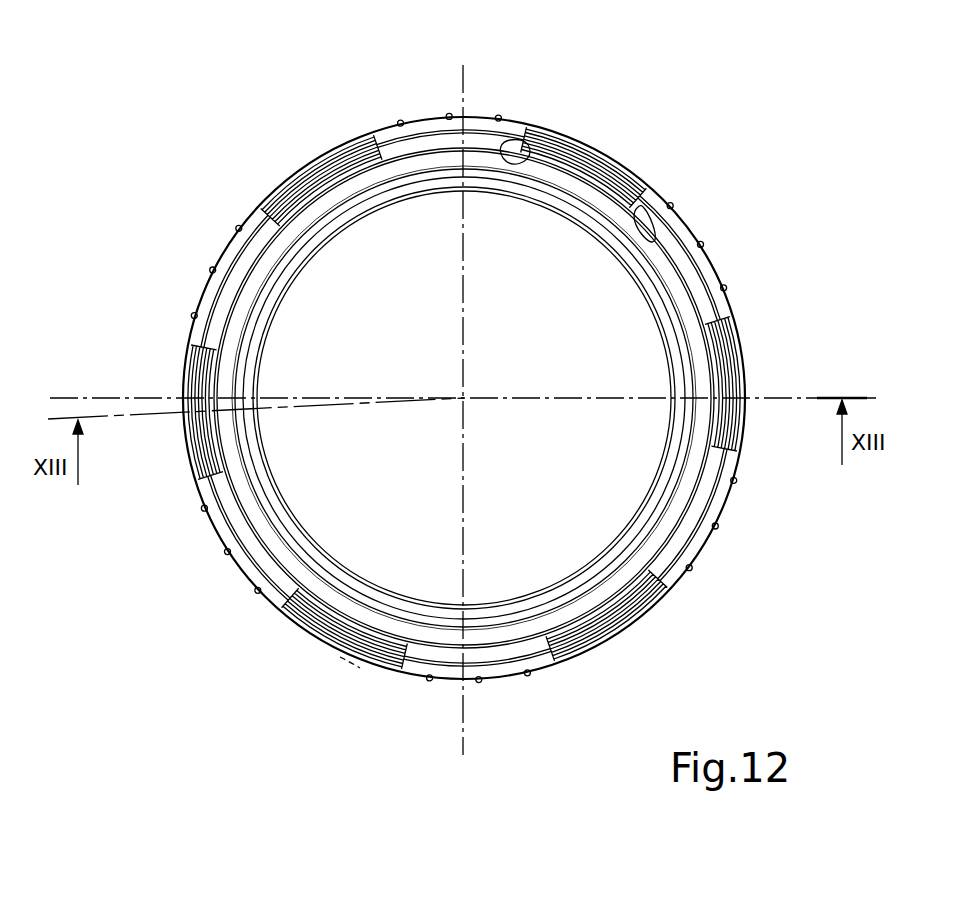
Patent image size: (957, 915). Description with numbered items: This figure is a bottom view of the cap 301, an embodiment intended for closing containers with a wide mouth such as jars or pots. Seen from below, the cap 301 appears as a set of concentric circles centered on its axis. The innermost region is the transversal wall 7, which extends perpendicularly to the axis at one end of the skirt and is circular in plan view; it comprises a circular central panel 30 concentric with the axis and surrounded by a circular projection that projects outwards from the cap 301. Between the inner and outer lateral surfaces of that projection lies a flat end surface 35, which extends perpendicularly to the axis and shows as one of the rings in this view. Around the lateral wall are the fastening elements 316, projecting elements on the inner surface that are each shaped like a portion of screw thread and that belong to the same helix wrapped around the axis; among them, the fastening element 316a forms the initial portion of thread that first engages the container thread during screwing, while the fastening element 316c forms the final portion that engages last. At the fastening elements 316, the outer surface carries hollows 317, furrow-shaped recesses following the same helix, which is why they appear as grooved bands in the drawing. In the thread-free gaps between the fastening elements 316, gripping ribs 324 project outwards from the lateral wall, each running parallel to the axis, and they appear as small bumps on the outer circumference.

The transversal wall 7 is at (367, 266).
The central panel 30 is at (551, 347).
The end surface 35 is at (417, 163).
The cap 301 is at (648, 133).
The fastening elements 316 is at (345, 640).
The fastening element 316a is at (655, 241).
The fastening element 316c is at (503, 158).
The hollows 317 is at (340, 657).
The gripping ribs 324 is at (448, 113).